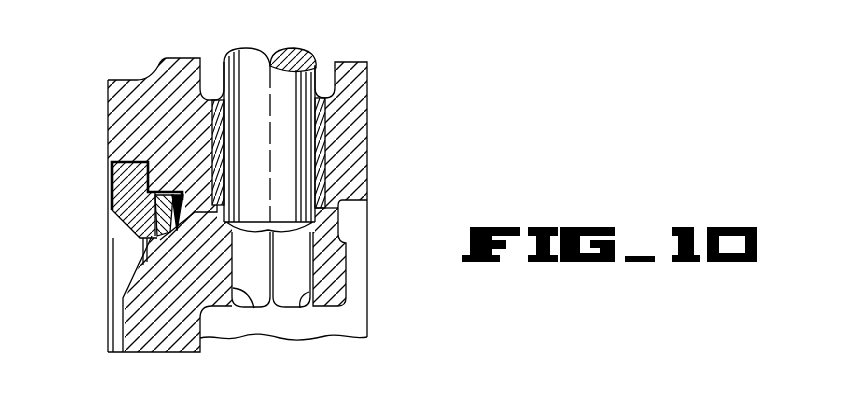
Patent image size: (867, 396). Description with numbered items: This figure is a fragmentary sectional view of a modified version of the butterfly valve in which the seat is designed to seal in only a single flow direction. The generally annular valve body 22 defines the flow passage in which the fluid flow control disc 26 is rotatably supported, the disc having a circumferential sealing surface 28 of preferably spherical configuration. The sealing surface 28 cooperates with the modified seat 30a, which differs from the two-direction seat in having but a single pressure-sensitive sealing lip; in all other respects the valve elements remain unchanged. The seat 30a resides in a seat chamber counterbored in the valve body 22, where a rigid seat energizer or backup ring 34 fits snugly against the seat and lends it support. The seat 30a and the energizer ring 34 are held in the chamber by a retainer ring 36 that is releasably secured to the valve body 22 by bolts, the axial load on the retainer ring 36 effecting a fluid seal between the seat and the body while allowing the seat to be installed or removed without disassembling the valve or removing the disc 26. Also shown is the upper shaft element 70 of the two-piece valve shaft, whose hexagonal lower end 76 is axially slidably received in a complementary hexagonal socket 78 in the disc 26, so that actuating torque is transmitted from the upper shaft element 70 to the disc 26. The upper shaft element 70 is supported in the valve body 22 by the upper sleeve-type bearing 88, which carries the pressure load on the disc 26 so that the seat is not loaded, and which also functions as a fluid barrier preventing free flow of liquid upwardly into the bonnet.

The valve body 22 is at (122, 118).
The retainer ring 36 is at (123, 190).
The seat energizer or backup ring 34 is at (122, 213).
The circumferential sealing surface 28 is at (187, 222).
The seat 30a is at (169, 234).
The fluid flow control disc 26 is at (132, 315).
The upper shaft element 70 is at (263, 60).
The hexagonal socket 78 is at (258, 306).
The hexagonal lower end 76 is at (296, 305).
The upper sleeve-type bearing 88 is at (325, 143).